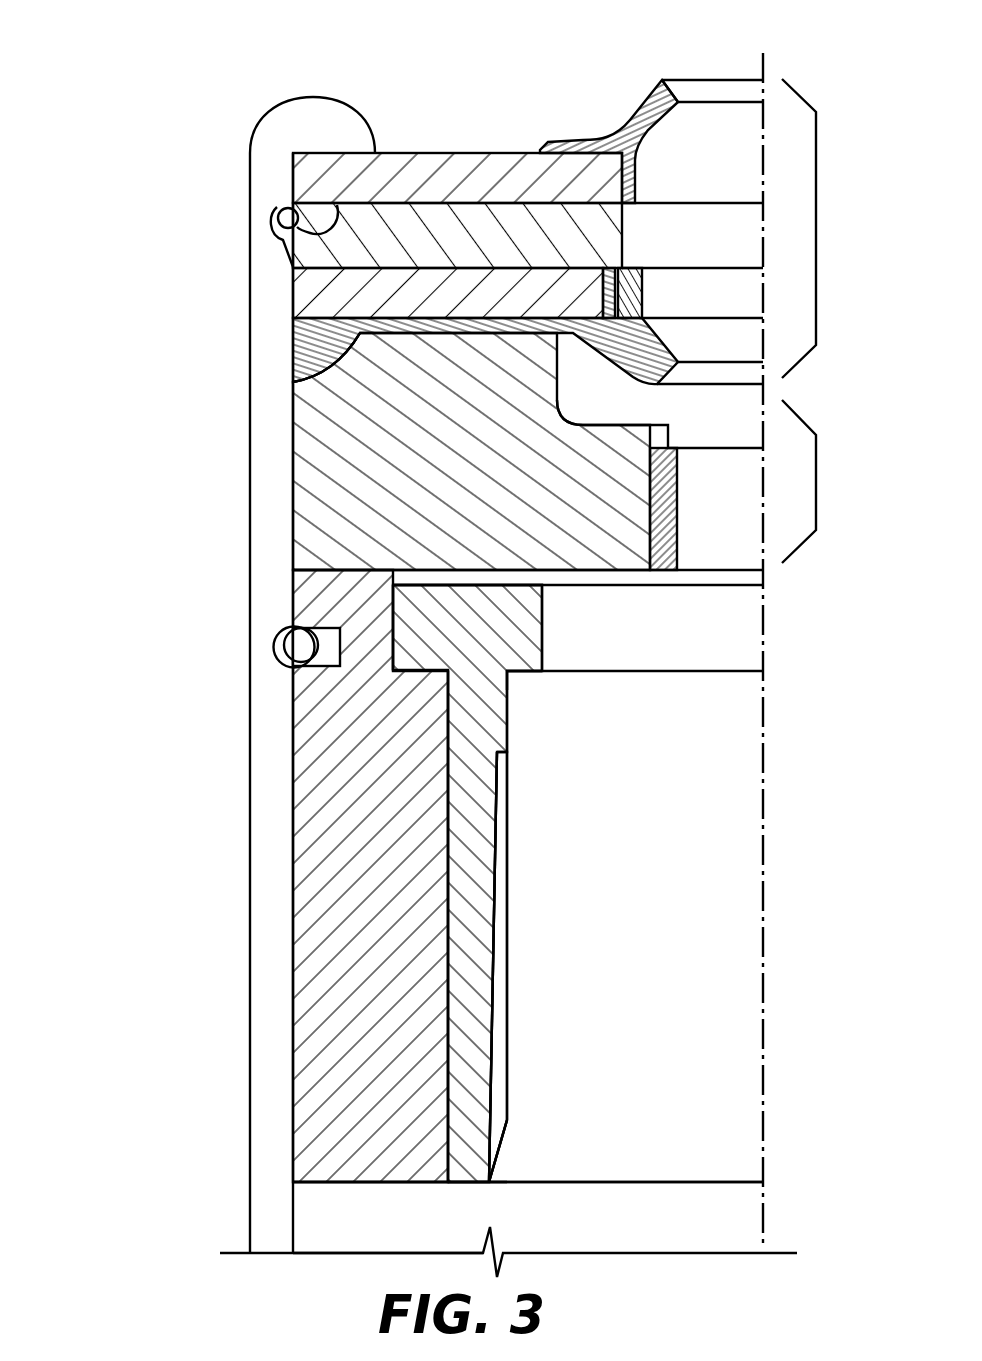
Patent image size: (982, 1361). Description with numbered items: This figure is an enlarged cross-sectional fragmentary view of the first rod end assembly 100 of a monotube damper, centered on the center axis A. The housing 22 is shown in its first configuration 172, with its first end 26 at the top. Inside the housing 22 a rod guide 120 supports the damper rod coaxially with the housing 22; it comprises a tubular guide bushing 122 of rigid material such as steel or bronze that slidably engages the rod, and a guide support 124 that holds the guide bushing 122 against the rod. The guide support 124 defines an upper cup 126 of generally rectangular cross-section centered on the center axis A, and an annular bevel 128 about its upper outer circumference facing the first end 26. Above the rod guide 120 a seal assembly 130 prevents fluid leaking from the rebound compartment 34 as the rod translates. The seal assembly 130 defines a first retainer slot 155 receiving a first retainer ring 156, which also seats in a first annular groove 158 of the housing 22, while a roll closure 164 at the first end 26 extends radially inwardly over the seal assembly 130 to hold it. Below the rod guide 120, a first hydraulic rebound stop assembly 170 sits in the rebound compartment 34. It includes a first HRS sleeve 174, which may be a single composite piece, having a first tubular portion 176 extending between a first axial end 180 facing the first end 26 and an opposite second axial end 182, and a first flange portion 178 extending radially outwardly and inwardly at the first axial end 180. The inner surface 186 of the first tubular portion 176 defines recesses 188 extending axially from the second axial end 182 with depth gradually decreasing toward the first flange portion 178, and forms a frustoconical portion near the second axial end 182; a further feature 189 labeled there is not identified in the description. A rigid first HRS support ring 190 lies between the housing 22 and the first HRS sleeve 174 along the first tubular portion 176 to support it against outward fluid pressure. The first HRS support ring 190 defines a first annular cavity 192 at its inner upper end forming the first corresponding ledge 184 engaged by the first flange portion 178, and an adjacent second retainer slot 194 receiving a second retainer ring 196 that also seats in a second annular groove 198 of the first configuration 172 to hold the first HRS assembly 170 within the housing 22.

The first rod end assembly 100 is at (134, 51).
The housing 22 is at (262, 1012).
The first configuration of the housing 172 is at (271, 703).
The first end 26 is at (253, 130).
The roll closure 164 is at (332, 125).
The first annular groove 158 is at (315, 235).
The first retainer ring 156 is at (276, 216).
The first retainer slot 155 is at (333, 230).
The seal assembly 130 is at (816, 228).
The annular bevel 128 is at (318, 397).
The guide support 124 is at (367, 497).
The upper cup 126 is at (603, 403).
The guide bushing 122 is at (668, 507).
The rod guide 120 is at (816, 483).
The first hydraulic rebound stop assembly 170 is at (286, 883).
The second retainer slot 194 is at (328, 658).
The second retainer ring 196 is at (300, 627).
The second annular groove 198 is at (296, 648).
The first annular cavity 192 is at (396, 610).
The first corresponding ledge 184 is at (420, 670).
The first flange portion 178 is at (518, 622).
The first axial end 180 is at (500, 668).
The first HRS sleeve 174 is at (514, 727).
The first tubular portion 176 is at (477, 900).
The inner surface 186 is at (508, 875).
The recesses 188 is at (500, 1063).
The tip 189 is at (503, 1140).
The first HRS support ring 190 is at (373, 1140).
The second axial end 182 is at (470, 1182).
The rebound compartment 34 is at (700, 1212).
The center axis A is at (765, 860).